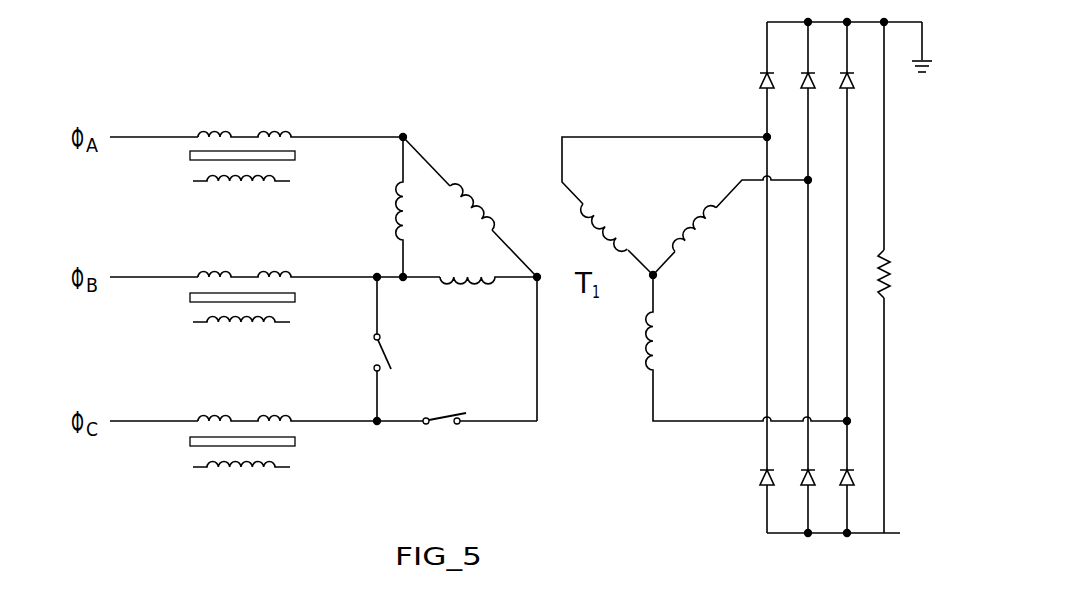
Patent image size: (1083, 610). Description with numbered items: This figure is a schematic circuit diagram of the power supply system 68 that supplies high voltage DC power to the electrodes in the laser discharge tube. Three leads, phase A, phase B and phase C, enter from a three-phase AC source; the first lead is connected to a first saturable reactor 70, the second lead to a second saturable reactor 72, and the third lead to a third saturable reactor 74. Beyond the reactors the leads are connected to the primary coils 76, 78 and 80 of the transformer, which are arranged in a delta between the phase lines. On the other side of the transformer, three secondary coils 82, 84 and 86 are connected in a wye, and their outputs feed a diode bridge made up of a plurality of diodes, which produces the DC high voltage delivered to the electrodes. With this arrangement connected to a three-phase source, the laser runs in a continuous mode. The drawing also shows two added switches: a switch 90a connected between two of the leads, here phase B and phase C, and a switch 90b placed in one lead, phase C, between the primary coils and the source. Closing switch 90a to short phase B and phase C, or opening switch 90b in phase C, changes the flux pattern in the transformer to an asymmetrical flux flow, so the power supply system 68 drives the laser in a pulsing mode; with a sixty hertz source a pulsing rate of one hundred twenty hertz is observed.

The power supply system 68 is at (102, 223).
The first saturable reactor 70 is at (296, 137).
The second saturable reactor 72 is at (315, 279).
The third saturable reactor 74 is at (306, 423).
The primary coil 76 is at (381, 207).
The primary coil 78 is at (470, 207).
The primary coil 80 is at (488, 302).
The secondary coil 82 is at (664, 206).
The secondary coil 84 is at (730, 225).
The secondary coil 86 is at (746, 348).
The switch 90a is at (404, 349).
The switch 90b is at (480, 437).